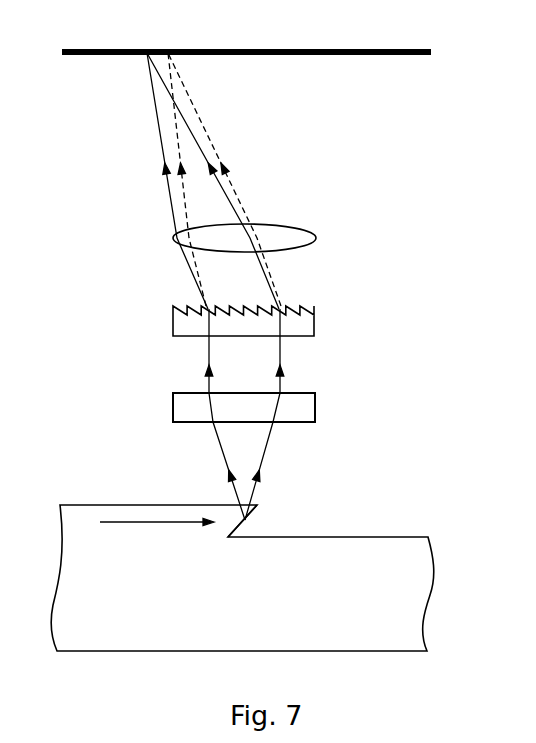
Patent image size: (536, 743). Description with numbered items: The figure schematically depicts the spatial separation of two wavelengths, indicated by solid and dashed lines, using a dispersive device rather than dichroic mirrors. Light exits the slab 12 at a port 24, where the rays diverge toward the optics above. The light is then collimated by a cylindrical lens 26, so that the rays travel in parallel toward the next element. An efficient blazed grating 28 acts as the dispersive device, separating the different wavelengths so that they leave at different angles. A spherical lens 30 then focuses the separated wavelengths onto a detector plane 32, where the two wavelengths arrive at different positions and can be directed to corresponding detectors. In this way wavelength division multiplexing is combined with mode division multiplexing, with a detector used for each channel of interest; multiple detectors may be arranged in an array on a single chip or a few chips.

The slab 12 is at (242, 578).
The port 24 is at (263, 520).
The cylindrical lens 26 is at (265, 407).
The blazed grating 28 is at (226, 321).
The spherical lens 30 is at (265, 238).
The detector plane 32 is at (273, 61).